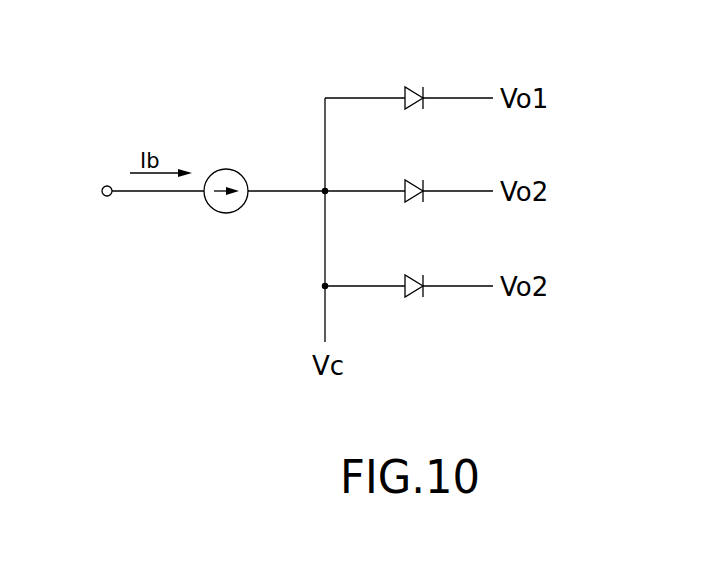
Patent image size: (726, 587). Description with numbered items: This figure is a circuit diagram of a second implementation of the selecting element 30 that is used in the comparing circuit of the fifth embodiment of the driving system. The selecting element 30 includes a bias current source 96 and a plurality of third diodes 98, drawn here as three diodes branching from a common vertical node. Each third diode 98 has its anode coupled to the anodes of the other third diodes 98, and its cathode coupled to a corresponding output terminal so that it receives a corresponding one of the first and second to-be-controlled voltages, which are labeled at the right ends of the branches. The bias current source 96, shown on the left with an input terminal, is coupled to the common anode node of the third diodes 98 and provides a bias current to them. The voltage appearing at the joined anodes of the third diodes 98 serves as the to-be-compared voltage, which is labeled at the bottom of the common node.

The selecting element 30 is at (603, 66).
The bias current source 96 is at (226, 168).
The third diode 98 is at (413, 86).